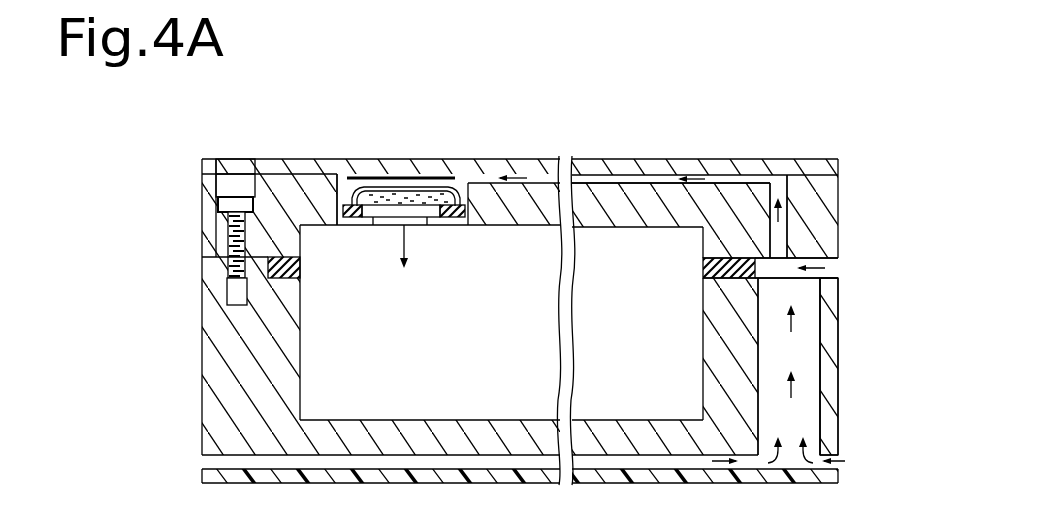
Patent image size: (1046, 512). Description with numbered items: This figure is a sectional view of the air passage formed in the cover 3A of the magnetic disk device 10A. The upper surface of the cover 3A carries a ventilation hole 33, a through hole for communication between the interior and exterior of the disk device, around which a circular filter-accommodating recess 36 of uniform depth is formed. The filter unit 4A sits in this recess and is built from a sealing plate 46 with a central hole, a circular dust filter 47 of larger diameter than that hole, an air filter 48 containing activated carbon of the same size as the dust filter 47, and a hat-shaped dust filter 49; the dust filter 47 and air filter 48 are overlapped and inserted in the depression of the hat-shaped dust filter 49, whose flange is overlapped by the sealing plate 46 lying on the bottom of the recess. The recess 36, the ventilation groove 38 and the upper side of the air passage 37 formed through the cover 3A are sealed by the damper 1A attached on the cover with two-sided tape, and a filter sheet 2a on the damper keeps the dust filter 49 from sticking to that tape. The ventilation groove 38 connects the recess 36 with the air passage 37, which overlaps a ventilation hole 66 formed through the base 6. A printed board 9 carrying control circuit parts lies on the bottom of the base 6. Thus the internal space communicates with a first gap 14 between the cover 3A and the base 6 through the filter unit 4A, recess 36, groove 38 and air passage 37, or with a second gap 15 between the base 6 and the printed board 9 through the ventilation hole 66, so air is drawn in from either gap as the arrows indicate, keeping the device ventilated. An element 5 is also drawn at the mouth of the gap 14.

The magnetic disk device 10A is at (814, 132).
The damper 1A is at (470, 154).
The filter sheet 2a is at (363, 178).
The cover 3A is at (842, 199).
The filter unit 4A is at (458, 186).
The filter-accommodating recess 36 is at (345, 183).
The air filter 48 is at (387, 190).
The hat-shaped dust filter 49 is at (435, 190).
The sealing plate 46 is at (357, 225).
The dust filter 47 is at (402, 207).
The ventilation hole 33 is at (413, 213).
The ventilation groove 38 is at (633, 180).
The air passage 37 is at (780, 235).
The first gap 14 is at (827, 268).
The filter 5 is at (705, 267).
The base 6 is at (842, 353).
The ventilation hole 66 is at (810, 410).
The printed board 9 is at (410, 483).
The second gap 15 is at (667, 468).